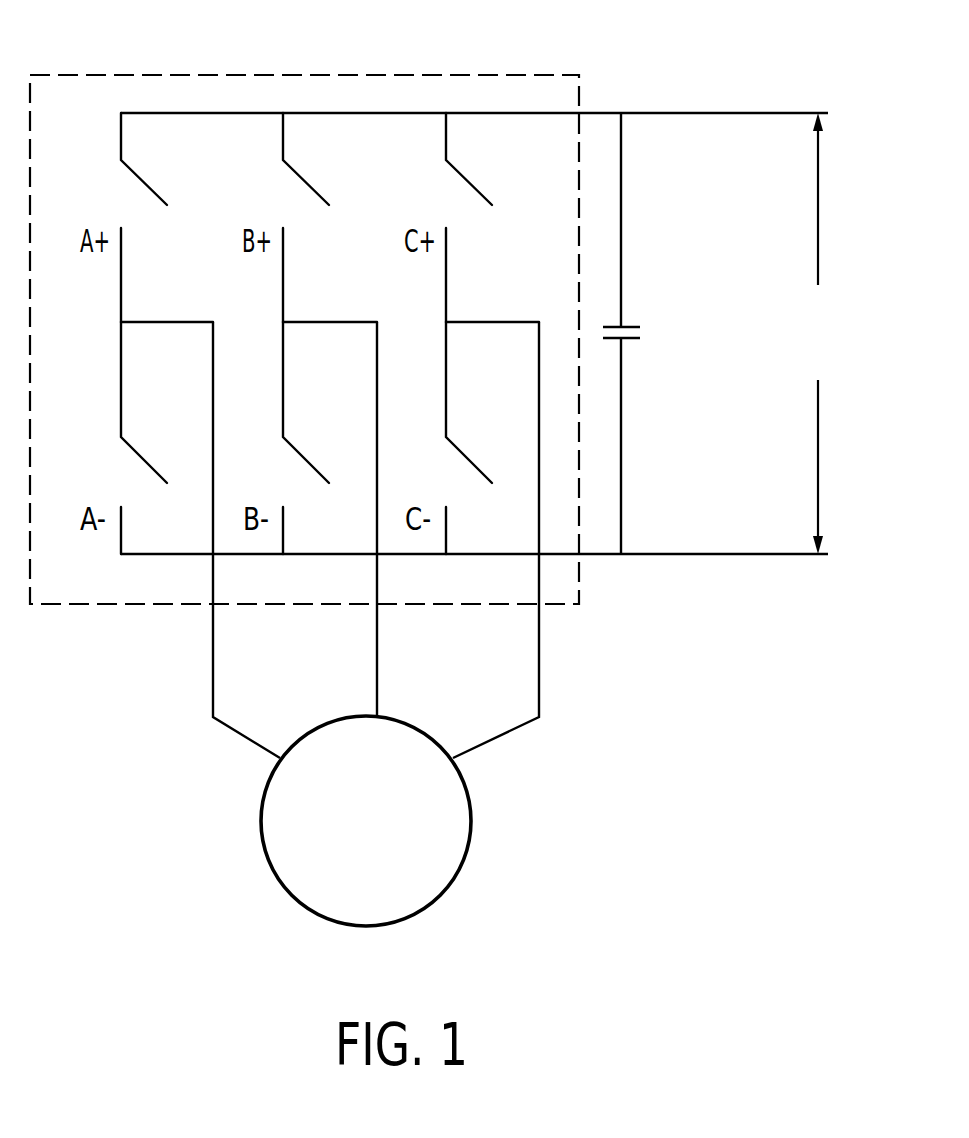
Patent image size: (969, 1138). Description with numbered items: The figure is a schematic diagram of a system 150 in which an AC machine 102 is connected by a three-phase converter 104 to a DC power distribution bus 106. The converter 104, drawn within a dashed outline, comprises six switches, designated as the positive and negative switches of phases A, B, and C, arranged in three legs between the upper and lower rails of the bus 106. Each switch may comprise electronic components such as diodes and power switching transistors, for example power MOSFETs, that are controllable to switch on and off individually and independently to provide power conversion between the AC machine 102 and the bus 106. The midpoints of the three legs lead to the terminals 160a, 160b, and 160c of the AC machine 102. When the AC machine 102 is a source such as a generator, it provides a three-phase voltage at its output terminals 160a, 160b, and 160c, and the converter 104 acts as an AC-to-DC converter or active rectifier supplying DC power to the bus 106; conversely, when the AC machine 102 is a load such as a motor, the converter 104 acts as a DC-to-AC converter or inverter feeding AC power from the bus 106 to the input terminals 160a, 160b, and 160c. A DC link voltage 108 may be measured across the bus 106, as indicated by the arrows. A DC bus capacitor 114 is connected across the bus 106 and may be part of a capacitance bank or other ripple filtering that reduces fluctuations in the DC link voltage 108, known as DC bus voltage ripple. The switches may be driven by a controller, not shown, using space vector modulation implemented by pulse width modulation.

The AC machine 102 is at (443, 888).
The three-phase converter 104 is at (88, 75).
The DC power distribution bus 106 is at (683, 113).
The DC link voltage 108 is at (818, 470).
The DC bus capacitor 114 is at (630, 327).
The system 150 is at (877, 665).
The terminal 160a is at (237, 731).
The terminal 160b is at (377, 678).
The terminal 160c is at (495, 735).